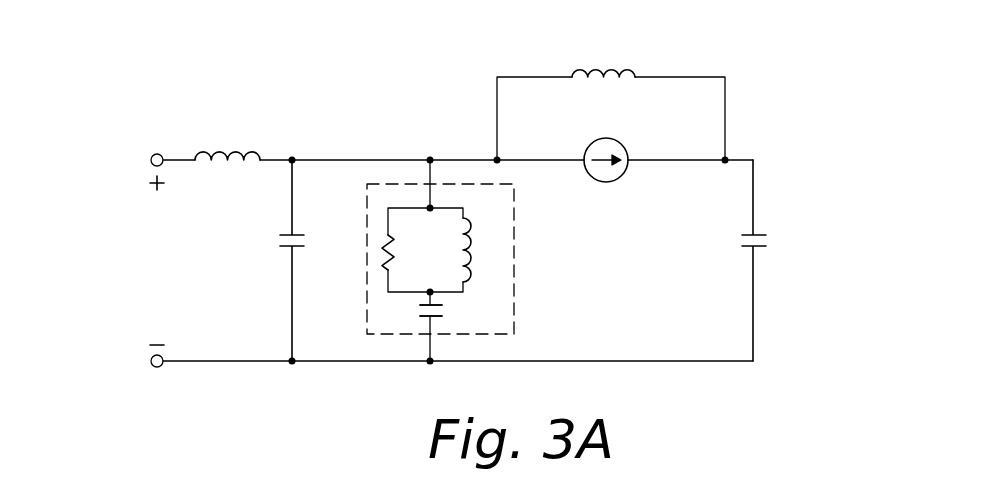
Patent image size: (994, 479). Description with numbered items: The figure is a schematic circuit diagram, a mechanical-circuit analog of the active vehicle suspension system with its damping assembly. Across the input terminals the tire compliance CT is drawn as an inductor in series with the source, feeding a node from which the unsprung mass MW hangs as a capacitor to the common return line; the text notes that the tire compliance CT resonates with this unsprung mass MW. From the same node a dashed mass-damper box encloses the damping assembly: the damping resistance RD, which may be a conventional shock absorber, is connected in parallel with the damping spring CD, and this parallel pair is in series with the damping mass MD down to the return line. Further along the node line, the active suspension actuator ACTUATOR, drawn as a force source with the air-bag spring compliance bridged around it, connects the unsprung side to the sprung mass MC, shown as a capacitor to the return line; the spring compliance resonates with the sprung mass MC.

The tire compliance CT is at (227, 141).
The unsprung mass MW is at (315, 260).
The damping resistance RD is at (405, 254).
The damping spring CD is at (484, 250).
The damping mass MD is at (451, 317).
The active suspension actuator ACTUATOR is at (603, 182).
The sprung mass MC is at (776, 260).